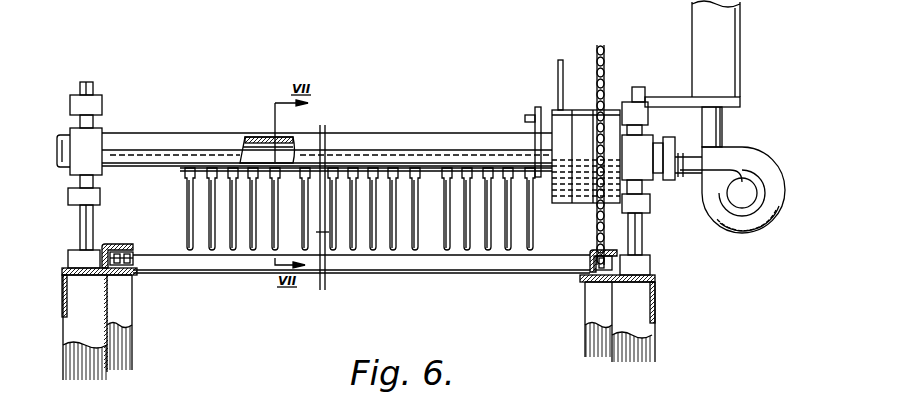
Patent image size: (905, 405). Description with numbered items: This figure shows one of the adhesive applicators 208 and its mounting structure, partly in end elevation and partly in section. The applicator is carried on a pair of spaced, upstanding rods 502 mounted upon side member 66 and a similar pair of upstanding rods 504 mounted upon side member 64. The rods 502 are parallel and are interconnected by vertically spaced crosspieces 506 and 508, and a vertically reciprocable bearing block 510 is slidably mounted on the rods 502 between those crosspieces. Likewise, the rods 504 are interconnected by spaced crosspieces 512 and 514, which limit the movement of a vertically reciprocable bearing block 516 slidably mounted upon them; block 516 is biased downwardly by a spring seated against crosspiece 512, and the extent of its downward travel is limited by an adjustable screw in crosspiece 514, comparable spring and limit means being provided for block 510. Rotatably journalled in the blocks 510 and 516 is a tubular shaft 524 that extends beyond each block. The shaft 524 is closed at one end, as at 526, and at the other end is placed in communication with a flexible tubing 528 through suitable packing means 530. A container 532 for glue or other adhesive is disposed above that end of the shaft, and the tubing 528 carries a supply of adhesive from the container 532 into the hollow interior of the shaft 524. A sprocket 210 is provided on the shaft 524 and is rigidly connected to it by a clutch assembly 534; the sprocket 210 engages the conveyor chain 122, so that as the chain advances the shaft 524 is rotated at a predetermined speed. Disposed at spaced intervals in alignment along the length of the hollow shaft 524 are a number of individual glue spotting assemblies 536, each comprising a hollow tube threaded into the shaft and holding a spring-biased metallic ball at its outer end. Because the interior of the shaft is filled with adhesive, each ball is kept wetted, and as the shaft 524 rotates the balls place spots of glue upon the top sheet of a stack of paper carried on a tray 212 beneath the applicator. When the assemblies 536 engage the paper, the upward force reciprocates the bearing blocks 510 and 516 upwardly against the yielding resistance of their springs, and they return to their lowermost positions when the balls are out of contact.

The crosspiece 506 is at (72, 103).
The bearing block 510 is at (75, 128).
The closed end of shaft 526 is at (58, 150).
The crosspiece 508 is at (68, 198).
The upstanding rods 502 is at (82, 225).
The side member 66 is at (65, 268).
The adhesive applicator 208 is at (147, 133).
The tubular shaft 524 is at (192, 143).
The glue spotting assemblies 536 is at (188, 210).
The tray 212 is at (423, 263).
The conveyor chain 122 is at (583, 270).
The side member 64 is at (655, 277).
The upstanding rods 504 is at (642, 236).
The crosspiece 514 is at (648, 203).
The bearing block 516 is at (645, 172).
The crosspiece 512 is at (643, 112).
The sprocket 210 is at (606, 68).
The clutch assembly 534 is at (560, 110).
The container 532 is at (727, 53).
The packing means 530 is at (713, 148).
The flexible tubing 528 is at (760, 218).